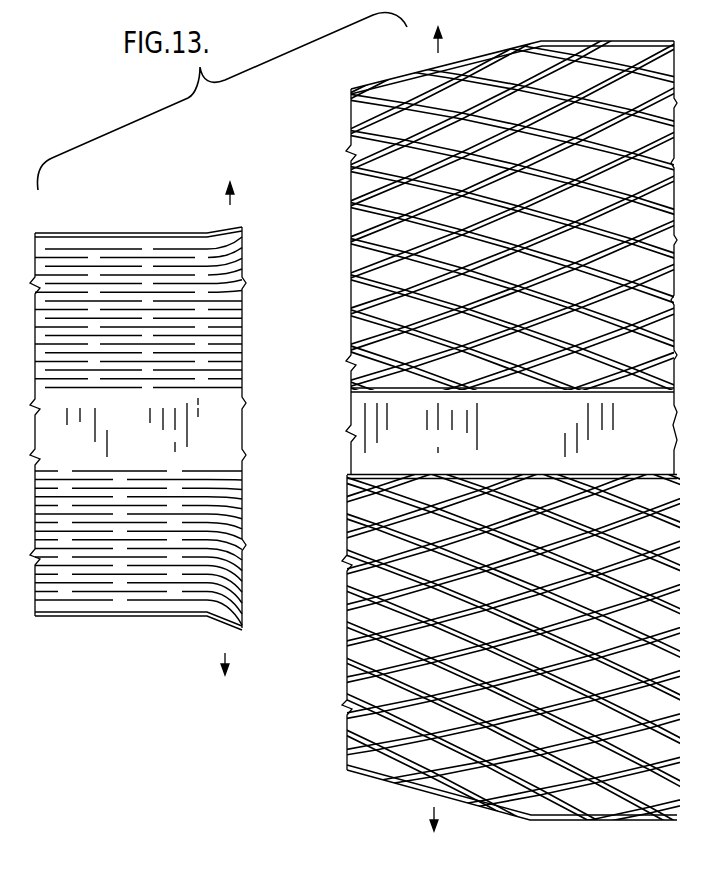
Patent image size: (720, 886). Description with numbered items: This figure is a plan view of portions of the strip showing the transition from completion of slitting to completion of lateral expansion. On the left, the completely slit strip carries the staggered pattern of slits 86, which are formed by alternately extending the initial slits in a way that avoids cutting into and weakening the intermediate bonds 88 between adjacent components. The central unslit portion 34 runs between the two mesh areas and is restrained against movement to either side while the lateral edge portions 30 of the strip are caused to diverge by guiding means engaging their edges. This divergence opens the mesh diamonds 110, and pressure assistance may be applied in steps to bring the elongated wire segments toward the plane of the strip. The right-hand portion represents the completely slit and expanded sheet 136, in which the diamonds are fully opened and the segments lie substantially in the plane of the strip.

The completely slit and expanded sheet 136 is at (629, 26).
The mesh diamonds 110 is at (467, 92).
The lateral edge portions 30 is at (522, 52).
The central unslit portion 34 is at (208, 433).
The staggered slits 86 is at (68, 606).
The intermediate bonds 88 is at (122, 606).